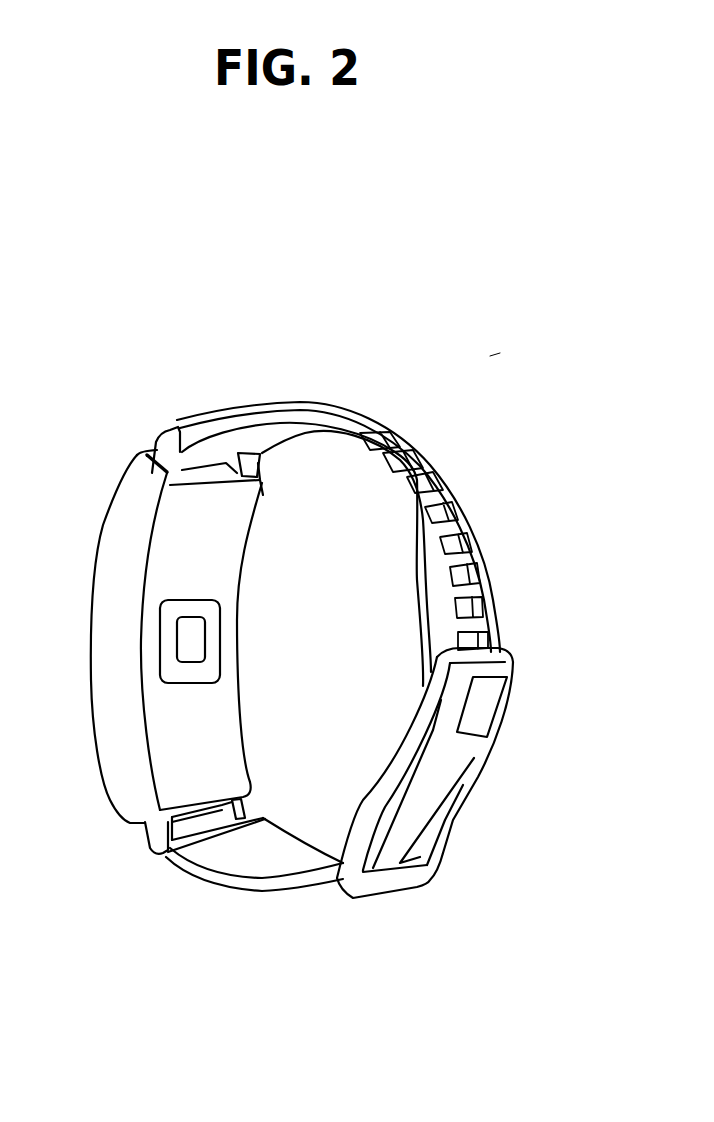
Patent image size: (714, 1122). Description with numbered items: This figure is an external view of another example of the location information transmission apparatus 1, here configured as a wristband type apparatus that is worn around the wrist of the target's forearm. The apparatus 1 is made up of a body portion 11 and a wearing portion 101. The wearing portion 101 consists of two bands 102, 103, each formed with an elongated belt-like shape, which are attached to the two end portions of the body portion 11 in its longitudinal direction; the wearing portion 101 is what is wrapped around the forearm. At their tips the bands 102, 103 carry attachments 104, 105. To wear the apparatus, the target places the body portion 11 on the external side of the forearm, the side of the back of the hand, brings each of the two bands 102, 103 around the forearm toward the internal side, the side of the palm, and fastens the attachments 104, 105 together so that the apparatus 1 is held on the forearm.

The location information transmission apparatus 1 is at (487, 359).
The body portion 11 is at (115, 492).
The wearing portion 101 is at (355, 407).
The band 102 is at (259, 890).
The band 103 is at (447, 495).
The attachment 104 is at (505, 666).
The attachment 105 is at (440, 872).